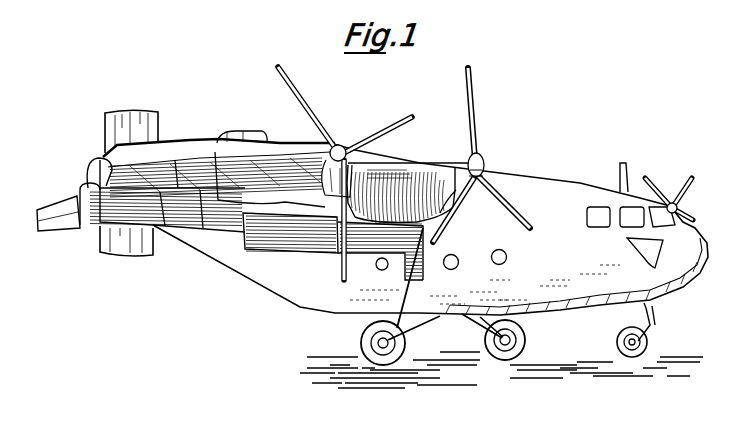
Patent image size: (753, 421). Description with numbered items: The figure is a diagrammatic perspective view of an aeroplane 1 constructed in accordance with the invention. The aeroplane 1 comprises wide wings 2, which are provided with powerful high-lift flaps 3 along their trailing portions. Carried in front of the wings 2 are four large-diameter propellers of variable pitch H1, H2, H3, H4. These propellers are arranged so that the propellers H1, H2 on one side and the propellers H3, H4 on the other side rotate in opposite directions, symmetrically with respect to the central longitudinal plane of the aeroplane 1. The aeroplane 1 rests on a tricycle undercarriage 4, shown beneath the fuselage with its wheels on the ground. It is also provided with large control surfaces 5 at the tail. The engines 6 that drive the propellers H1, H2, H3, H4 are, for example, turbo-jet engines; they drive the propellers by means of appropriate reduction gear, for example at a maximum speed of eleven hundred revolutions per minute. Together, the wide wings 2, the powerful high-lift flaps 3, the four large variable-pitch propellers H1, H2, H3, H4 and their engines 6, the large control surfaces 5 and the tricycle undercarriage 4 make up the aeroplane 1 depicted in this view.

The aeroplane 1 is at (540, 193).
The wide wings 2 is at (185, 140).
The high-lift flaps 3 is at (260, 237).
The tricycle undercarriage 4 is at (615, 335).
The control surfaces 5 is at (78, 214).
The engines 6 is at (420, 173).
The propeller H1 is at (680, 182).
The propeller H2 is at (622, 182).
The propeller H3 is at (473, 118).
The propeller H4 is at (323, 122).